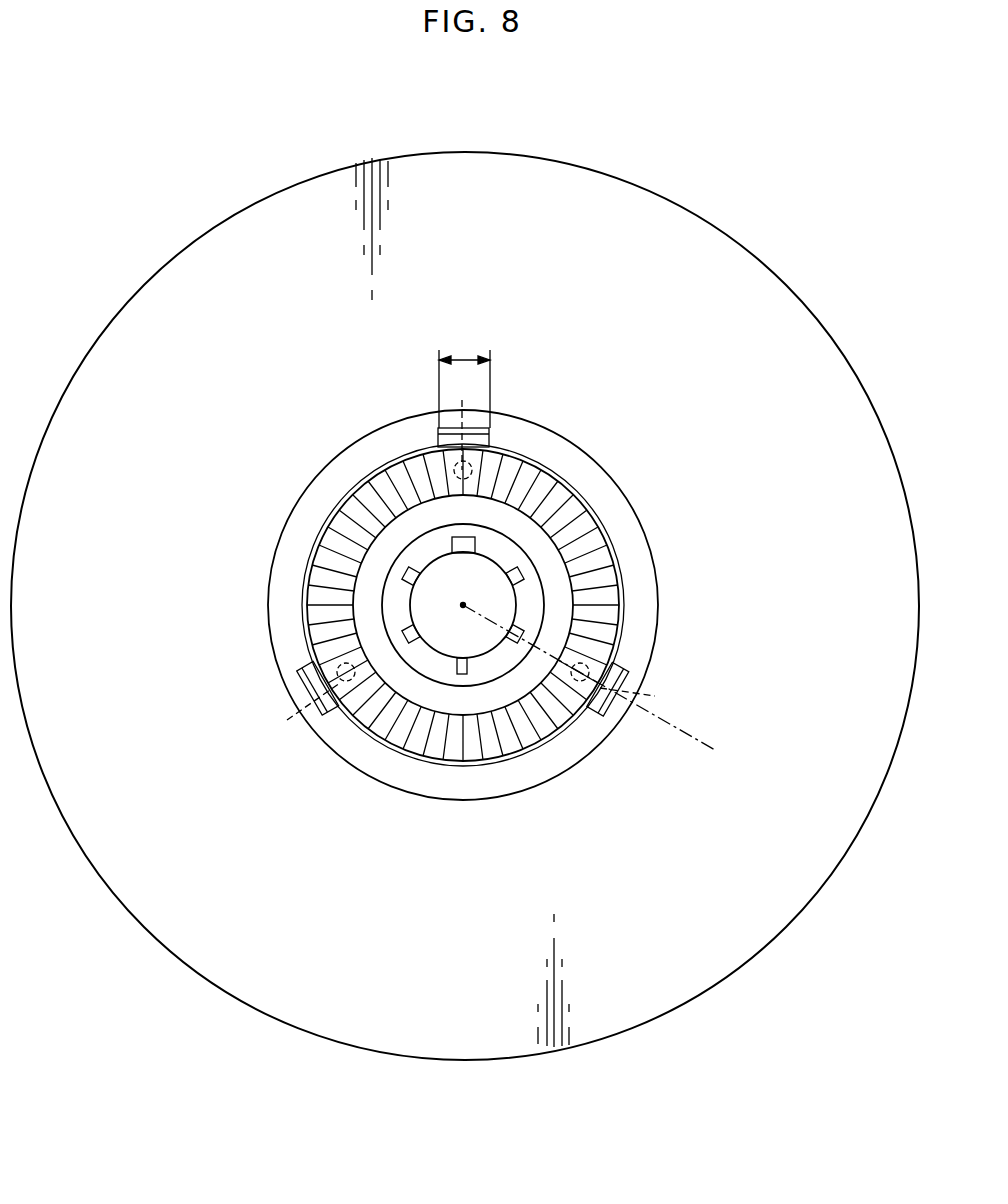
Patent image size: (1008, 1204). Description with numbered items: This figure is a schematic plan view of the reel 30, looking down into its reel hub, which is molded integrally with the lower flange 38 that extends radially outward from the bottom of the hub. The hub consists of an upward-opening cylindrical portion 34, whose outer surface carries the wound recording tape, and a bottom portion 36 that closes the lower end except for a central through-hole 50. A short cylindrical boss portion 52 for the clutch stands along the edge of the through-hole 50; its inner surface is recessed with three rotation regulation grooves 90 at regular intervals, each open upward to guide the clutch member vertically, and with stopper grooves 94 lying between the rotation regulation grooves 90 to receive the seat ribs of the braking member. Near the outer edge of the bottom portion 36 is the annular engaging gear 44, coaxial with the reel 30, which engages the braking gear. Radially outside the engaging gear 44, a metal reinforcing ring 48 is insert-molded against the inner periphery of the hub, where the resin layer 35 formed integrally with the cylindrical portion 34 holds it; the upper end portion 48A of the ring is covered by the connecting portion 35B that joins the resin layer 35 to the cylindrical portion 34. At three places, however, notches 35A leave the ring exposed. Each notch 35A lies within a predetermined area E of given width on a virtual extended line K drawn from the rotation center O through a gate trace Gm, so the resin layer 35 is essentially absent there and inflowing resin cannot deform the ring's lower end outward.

The reel 30 is at (702, 150).
The lower flange 38 is at (773, 312).
The cylindrical portion 34 is at (653, 555).
The bottom portion 36 is at (390, 713).
The resin layer 35 is at (355, 510).
The notch 35A is at (605, 698).
The connecting portion 35B is at (550, 457).
The engaging gear 44 is at (440, 743).
The reinforcing ring 48 is at (300, 680).
The upper end portion 48A is at (490, 443).
The through-hole 50 is at (476, 562).
The boss portion for clutch 52 is at (543, 610).
The rotation regulation groove 90 is at (480, 662).
The stopper groove 94 is at (400, 630).
The rotation center O is at (463, 605).
The virtual extended line K is at (722, 745).
The predetermined area E is at (463, 358).
The gate trace Gm is at (483, 566).